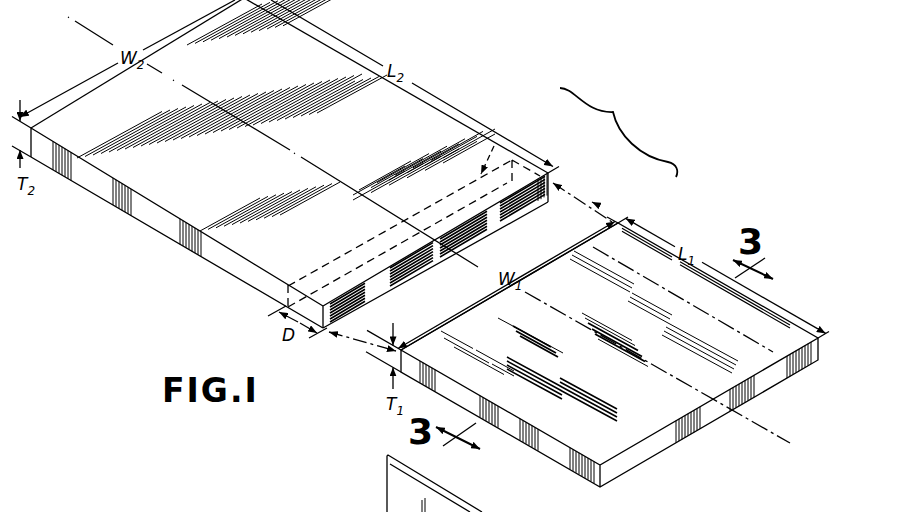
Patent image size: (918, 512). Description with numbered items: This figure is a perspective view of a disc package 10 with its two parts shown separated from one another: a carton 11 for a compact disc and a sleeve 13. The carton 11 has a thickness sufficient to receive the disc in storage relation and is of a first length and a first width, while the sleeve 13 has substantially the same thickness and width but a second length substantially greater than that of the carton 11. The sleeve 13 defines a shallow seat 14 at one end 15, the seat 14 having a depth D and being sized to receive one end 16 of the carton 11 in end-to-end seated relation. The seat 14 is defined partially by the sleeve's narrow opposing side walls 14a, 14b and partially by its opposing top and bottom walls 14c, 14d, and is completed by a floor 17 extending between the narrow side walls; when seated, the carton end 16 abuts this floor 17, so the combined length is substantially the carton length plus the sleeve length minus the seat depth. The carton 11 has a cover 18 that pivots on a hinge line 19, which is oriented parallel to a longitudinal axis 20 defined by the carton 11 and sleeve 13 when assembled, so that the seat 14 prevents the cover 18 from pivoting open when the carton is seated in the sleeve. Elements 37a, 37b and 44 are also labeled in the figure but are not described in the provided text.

The disc package 10 is at (618, 107).
The carton 11 is at (666, 458).
The sleeve 13 is at (189, 268).
The shallow seat 14 is at (508, 140).
The narrow opposing side wall 14a is at (160, 226).
The narrow opposing side wall 14b is at (442, 112).
The top wall 14c is at (246, 172).
The bottom wall 14d is at (237, 282).
The end of sleeve 15 is at (553, 178).
The end of disc carton 16 is at (528, 275).
The floor of seat 17 is at (367, 248).
The cover 18 is at (612, 381).
The hinge line 19 is at (714, 325).
The longitudinal axis 20 is at (337, 148).
The front left face of lower plate 37a is at (515, 428).
The front right face of lower plate 37b is at (708, 420).
The edge strip 44 is at (782, 327).